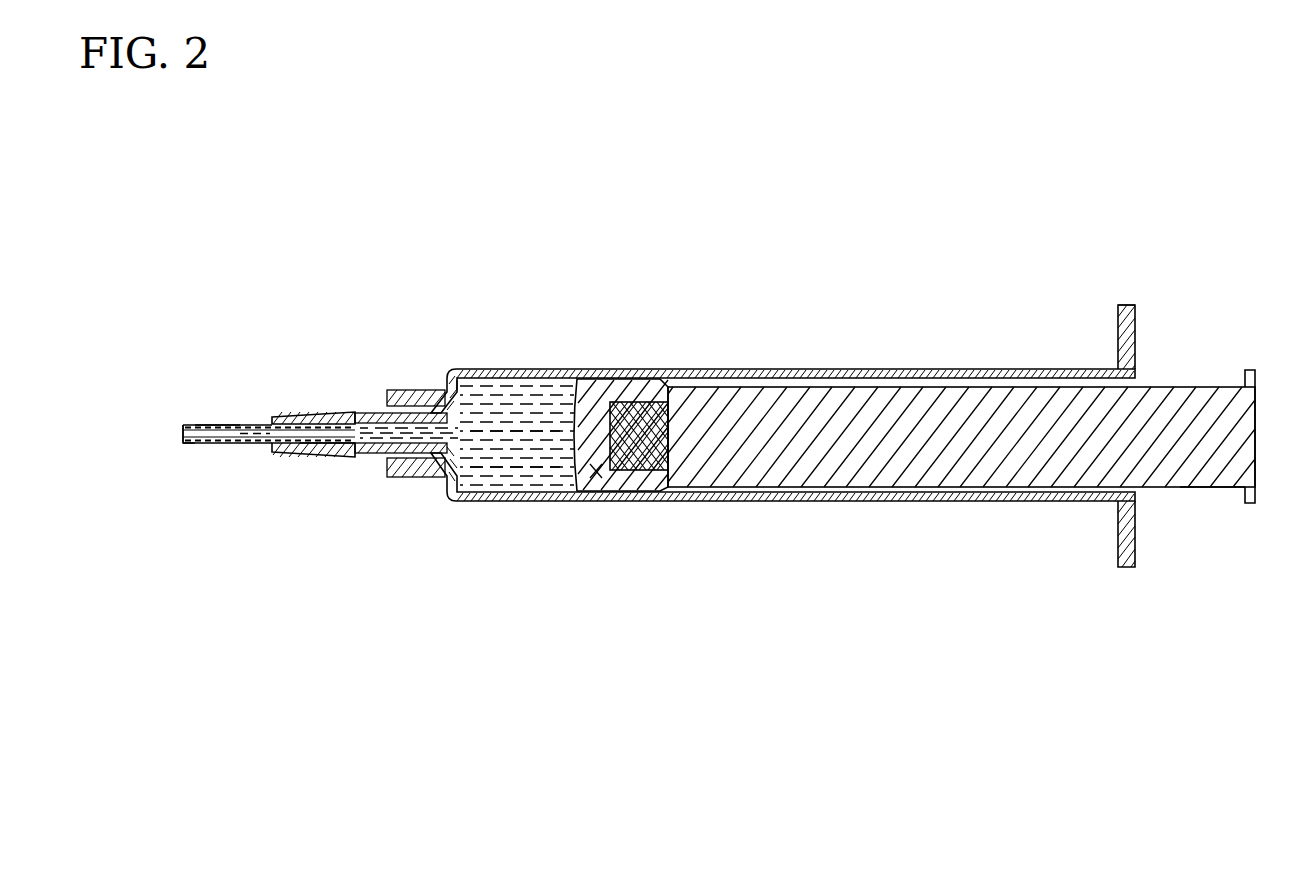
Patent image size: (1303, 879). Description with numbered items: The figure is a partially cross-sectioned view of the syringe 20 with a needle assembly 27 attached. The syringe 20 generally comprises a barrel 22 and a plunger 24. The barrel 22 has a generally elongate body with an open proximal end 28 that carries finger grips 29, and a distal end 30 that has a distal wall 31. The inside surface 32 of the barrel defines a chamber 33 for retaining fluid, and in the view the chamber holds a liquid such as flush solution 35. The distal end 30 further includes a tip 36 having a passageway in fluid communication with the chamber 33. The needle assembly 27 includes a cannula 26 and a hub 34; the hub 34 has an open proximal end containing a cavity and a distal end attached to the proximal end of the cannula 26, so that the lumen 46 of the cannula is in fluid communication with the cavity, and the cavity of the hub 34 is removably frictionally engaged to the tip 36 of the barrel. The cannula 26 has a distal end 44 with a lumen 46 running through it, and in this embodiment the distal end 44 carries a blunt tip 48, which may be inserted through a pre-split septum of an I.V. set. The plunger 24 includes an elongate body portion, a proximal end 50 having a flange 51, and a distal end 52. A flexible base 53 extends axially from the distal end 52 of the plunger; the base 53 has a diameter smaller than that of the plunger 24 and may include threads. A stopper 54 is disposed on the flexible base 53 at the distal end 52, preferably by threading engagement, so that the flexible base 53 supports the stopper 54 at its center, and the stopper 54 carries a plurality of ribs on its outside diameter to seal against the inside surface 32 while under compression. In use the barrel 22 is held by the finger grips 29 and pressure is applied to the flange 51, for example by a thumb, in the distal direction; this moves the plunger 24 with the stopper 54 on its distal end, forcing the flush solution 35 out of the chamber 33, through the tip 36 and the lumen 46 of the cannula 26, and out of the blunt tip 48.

The syringe 20 is at (948, 528).
The barrel 22 is at (748, 370).
The plunger 24 is at (846, 388).
The cannula 26 is at (218, 445).
The needle assembly 27 is at (304, 396).
The open proximal end 28 is at (1085, 370).
The finger grips 29 is at (1132, 305).
The distal end 30 is at (470, 501).
The distal wall 31 is at (470, 370).
The inside surface 32 is at (530, 378).
The chamber 33 is at (546, 432).
The hub 34 is at (337, 457).
The flush solution 35 is at (508, 470).
The tip 36 is at (376, 477).
The distal end 44 is at (203, 425).
The lumen 46 is at (250, 432).
The blunt tip 48 is at (183, 425).
The proximal end 50 is at (1212, 488).
The flange 51 is at (1249, 370).
The distal end 52 is at (676, 491).
The flexible base 53 is at (628, 370).
The stopper 54 is at (596, 480).